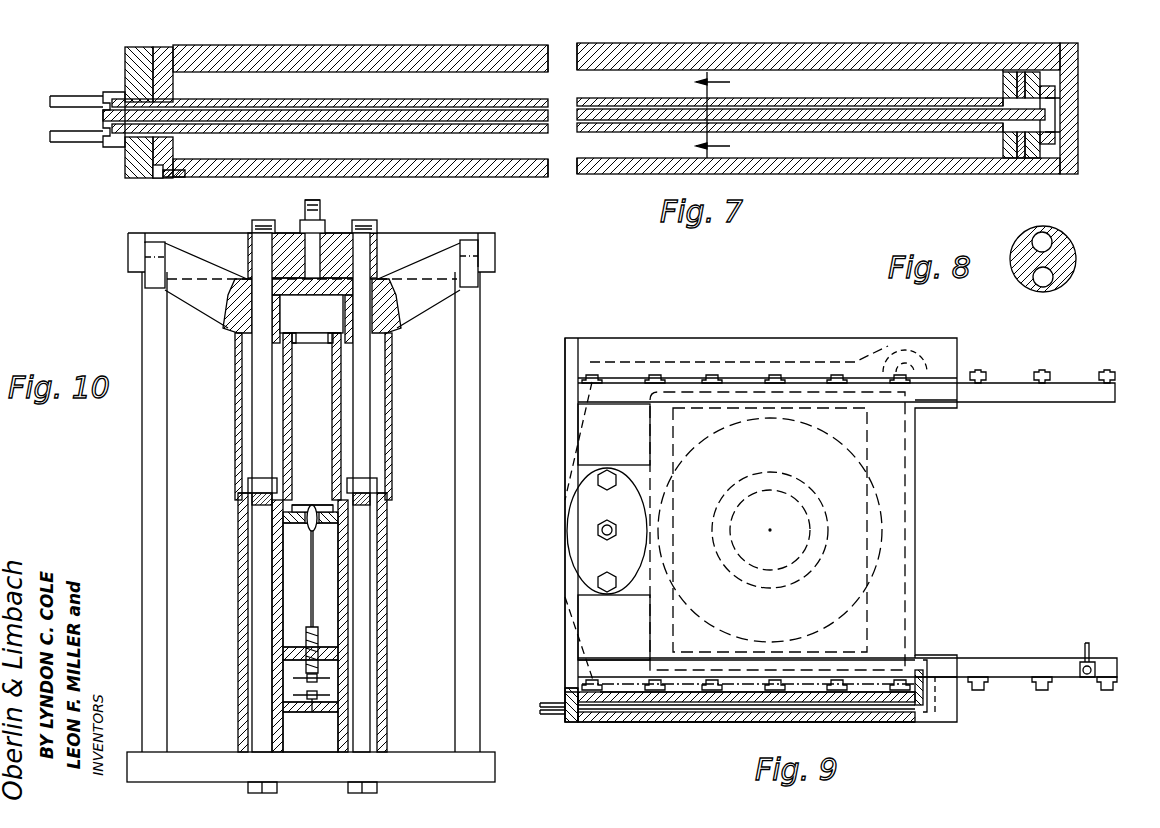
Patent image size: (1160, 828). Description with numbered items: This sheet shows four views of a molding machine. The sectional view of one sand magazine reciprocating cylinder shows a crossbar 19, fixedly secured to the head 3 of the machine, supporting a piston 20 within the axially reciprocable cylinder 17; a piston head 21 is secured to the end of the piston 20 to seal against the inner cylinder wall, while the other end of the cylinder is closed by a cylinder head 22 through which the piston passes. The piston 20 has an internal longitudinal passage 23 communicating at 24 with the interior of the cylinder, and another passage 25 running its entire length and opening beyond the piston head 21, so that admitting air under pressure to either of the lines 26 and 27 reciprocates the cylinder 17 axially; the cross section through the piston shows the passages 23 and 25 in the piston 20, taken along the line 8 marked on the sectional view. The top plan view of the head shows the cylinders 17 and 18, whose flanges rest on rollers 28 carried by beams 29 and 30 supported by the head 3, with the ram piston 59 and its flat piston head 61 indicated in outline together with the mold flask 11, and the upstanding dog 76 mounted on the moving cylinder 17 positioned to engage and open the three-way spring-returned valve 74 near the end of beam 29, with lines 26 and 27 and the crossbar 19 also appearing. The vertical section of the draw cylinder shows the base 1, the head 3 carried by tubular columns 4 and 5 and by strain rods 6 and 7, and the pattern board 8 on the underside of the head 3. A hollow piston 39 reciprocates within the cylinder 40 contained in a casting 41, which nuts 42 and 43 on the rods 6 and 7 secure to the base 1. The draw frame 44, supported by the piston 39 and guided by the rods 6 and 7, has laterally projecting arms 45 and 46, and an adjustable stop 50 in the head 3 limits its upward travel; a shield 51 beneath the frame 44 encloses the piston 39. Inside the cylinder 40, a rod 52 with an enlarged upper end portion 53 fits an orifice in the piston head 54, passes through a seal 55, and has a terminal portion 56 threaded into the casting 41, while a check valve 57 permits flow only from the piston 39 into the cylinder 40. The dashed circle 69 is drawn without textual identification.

In FIG. 10, the base 1 is at (428, 767).
In FIG. 9, the head 3 is at (905, 473).
In FIG. 10, the head 3 is at (495, 247).
In FIG. 10, the tubular column 4 is at (472, 436).
In FIG. 10, the tubular column 5 is at (154, 483).
In FIG. 9, the strain rod 6 is at (608, 478).
In FIG. 10, the strain rod 6 is at (258, 408).
In FIG. 9, the strain rod 7 is at (607, 596).
In FIG. 10, the strain rod 7 is at (360, 424).
In FIG. 7, the pattern board 8 is at (721, 115).
In FIG. 9, the mold flask 11 is at (870, 628).
In FIG. 7, the reciprocable cylinder 17 is at (853, 174).
In FIG. 9, the reciprocable cylinder 17 is at (925, 712).
In FIG. 9, the reciprocable cylinder 18 is at (800, 346).
In FIG. 7, the crossbar 19 is at (128, 72).
In FIG. 9, the crossbar 19 is at (567, 427).
In FIG. 7, the piston 20 is at (908, 130).
In FIG. 8, the piston 20 is at (1066, 257).
In FIG. 9, the piston 20 is at (673, 716).
In FIG. 7, the piston head 21 is at (1038, 160).
In FIG. 7, the cylinder head 22 is at (165, 63).
In FIG. 7, the internal longitudinal passage 23 is at (393, 108).
In FIG. 8, the internal longitudinal passage 23 is at (1032, 237).
In FIG. 7, the communication point 24 is at (1000, 100).
In FIG. 7, the passage 25 is at (496, 128).
In FIG. 8, the passage 25 is at (1048, 282).
In FIG. 7, the air line 26 is at (62, 98).
In FIG. 9, the air line 26 is at (553, 703).
In FIG. 7, the air line 27 is at (63, 141).
In FIG. 9, the air line 27 is at (549, 718).
In FIG. 9, the rollers 28 is at (1042, 372).
In FIG. 9, the beam 29 is at (1017, 660).
In FIG. 9, the beam 30 is at (1068, 392).
In FIG. 10, the hollow piston 39 is at (341, 392).
In FIG. 10, the draw cylinder 40 is at (336, 576).
In FIG. 10, the casting 41 is at (386, 626).
In FIG. 10, the nut 42 is at (246, 484).
In FIG. 10, the nut 43 is at (377, 484).
In FIG. 10, the draw frame 44 is at (393, 312).
In FIG. 10, the arm 45 is at (470, 245).
In FIG. 10, the arm 46 is at (155, 249).
In FIG. 10, the adjustable stop 50 is at (300, 275).
In FIG. 10, the shield 51 is at (238, 377).
In FIG. 10, the rod 52 is at (310, 602).
In FIG. 10, the enlarged upper end portion 53 is at (312, 505).
In FIG. 10, the piston head 54 is at (300, 528).
In FIG. 10, the seal 55 is at (317, 642).
In FIG. 10, the terminal portion 56 is at (310, 732).
In FIG. 10, the check valve 57 is at (330, 530).
In FIG. 9, the ram piston 59 is at (870, 496).
In FIG. 9, the piston head 61 is at (875, 586).
In FIG. 9, the middle dashed circle 69 is at (875, 555).
In FIG. 9, the three-way spring-returned valve 74 is at (1087, 678).
In FIG. 9, the dog 76 is at (925, 672).